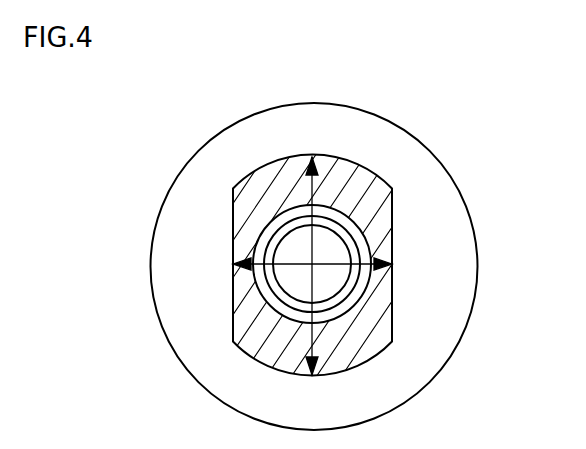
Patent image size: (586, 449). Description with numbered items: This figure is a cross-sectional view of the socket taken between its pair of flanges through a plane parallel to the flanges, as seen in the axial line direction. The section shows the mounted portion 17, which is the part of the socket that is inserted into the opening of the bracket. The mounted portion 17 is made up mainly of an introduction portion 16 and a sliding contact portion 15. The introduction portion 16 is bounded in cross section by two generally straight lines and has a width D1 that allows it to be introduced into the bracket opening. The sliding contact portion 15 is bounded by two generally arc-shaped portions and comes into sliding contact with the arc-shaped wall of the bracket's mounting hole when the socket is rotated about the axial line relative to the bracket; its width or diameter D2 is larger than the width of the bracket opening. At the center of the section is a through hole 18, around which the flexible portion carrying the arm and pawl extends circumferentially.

The sliding contact portion 15 is at (268, 370).
The introduction portion 16 is at (256, 258).
The mounted portion 17 is at (102, 290).
The through hole 18 is at (290, 222).
The width of introduction portion D1 is at (338, 265).
The width (diameter) of sliding contact portion D2 is at (312, 200).